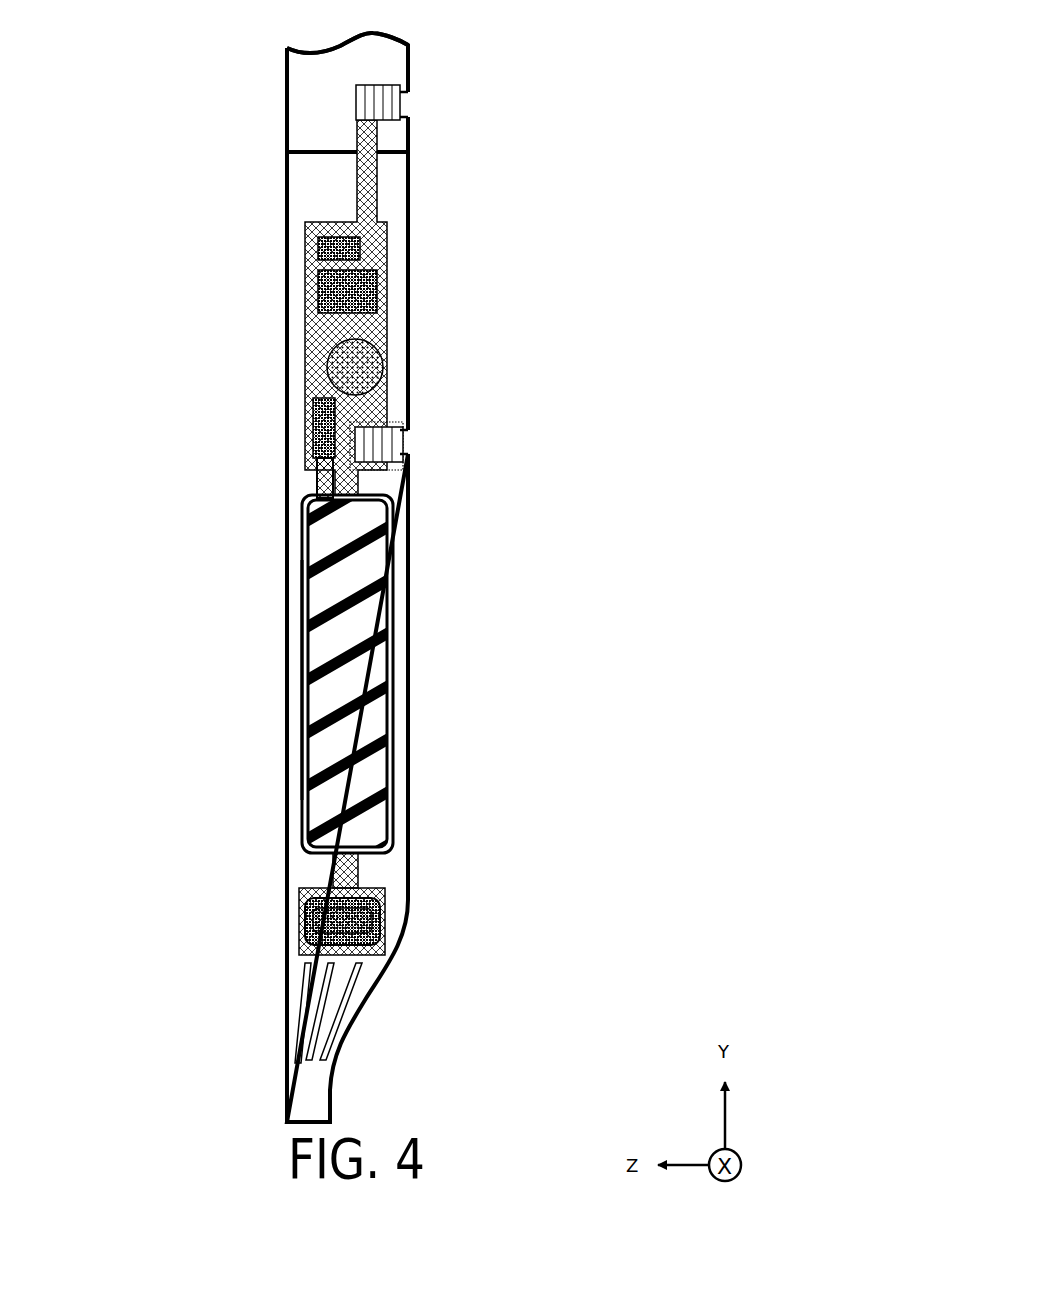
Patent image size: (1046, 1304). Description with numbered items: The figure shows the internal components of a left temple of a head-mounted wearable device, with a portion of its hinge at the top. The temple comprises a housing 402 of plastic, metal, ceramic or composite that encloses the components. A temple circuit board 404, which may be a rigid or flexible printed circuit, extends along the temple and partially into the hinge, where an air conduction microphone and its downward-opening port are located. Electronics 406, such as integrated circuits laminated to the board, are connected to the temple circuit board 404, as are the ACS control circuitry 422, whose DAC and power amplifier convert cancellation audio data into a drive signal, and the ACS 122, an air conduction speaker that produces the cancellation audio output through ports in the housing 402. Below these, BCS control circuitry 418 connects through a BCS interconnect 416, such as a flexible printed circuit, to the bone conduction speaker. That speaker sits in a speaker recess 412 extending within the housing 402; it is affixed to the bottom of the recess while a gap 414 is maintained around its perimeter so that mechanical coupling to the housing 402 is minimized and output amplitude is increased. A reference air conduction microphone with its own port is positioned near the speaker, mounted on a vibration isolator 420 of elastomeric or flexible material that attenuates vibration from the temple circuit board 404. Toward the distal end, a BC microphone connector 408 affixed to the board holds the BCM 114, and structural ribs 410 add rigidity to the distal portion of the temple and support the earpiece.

The housing 402 is at (287, 250).
The temple circuit board 404 is at (308, 340).
The BCS control circuitry 418 is at (322, 428).
The BCS interconnect 416 is at (325, 488).
The speaker recess 412 is at (302, 647).
The gap 414 is at (307, 708).
The BC microphone connector 408 is at (328, 897).
The structural ribs 410 is at (302, 1015).
The electronics 406 is at (356, 247).
The ACS control circuitry 422 is at (372, 292).
The ACS 122 is at (372, 362).
The vibration isolator 420 is at (370, 469).
The BCM 114 is at (347, 920).